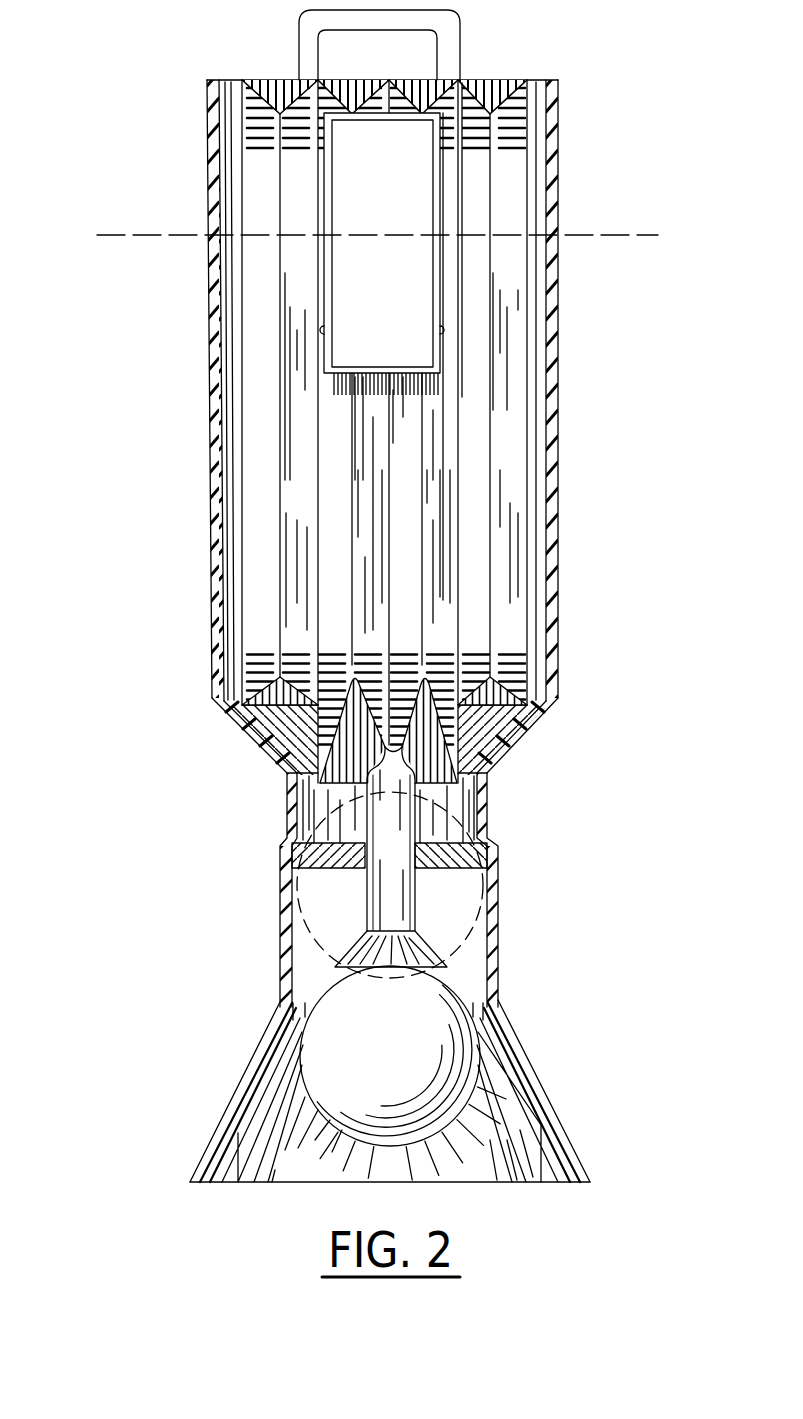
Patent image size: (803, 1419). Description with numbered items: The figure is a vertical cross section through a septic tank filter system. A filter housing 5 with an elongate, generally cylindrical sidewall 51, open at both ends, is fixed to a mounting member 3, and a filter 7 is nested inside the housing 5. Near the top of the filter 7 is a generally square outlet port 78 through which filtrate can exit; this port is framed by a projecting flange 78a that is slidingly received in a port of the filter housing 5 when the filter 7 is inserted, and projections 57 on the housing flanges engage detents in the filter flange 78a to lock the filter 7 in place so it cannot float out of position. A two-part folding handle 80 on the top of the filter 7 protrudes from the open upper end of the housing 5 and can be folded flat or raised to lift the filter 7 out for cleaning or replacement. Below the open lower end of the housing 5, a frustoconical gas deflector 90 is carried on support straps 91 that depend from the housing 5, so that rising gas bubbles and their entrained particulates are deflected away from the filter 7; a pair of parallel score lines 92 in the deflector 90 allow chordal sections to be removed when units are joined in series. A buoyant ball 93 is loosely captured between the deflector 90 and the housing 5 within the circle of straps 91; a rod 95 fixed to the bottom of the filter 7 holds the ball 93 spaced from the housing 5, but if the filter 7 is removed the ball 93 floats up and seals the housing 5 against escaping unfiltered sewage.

The mounting member 3 is at (658, 285).
The filter housing 5 is at (209, 508).
The filter 7 is at (404, 433).
The sidewall 51 is at (214, 318).
The projections 57 is at (442, 331).
The outlet port 78 is at (364, 148).
The flange 78a is at (333, 208).
The folding handle 80 is at (306, 29).
The gas deflector 90 is at (517, 1060).
The support straps 91 is at (492, 922).
The score lines 92 is at (567, 1158).
The buoyant ball 93 is at (327, 1030).
The rod 95 is at (384, 860).